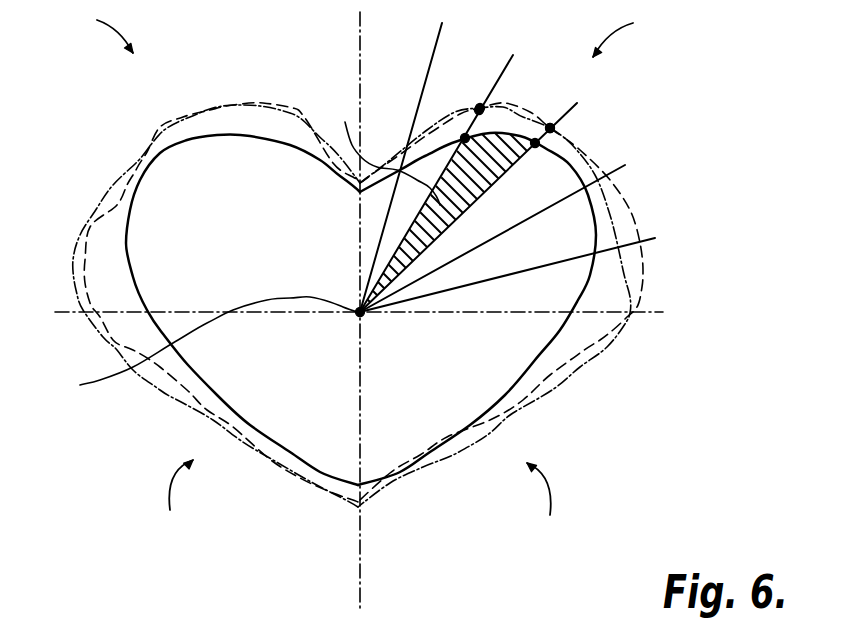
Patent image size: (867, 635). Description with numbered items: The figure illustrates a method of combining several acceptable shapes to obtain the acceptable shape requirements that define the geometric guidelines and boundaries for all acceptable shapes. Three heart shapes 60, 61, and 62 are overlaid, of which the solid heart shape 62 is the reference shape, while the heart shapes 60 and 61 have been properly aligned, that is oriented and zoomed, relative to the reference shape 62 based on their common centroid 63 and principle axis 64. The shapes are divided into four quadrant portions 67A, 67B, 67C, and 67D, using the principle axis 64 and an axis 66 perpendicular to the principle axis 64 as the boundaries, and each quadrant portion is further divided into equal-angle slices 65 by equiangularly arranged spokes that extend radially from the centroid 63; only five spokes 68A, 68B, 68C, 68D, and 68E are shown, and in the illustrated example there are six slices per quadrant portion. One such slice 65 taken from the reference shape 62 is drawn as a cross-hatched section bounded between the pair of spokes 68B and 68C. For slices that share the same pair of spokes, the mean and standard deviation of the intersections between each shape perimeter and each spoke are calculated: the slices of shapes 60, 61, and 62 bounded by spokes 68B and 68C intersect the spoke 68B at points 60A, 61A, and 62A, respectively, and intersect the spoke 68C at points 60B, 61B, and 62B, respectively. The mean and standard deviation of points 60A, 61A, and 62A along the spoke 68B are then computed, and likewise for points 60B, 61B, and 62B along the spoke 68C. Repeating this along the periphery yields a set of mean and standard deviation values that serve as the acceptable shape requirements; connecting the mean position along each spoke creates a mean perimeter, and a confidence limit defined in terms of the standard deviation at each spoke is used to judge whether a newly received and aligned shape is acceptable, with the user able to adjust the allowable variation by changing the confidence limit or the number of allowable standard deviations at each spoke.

The heart shape 60 is at (160, 127).
The heart shape 61 is at (97, 208).
The reference shape 62 is at (212, 135).
The centroid 63 is at (207, 348).
The principle axis 64 is at (358, 47).
The slice 65 is at (385, 155).
The axis perpendicular to the principle axis 66 is at (645, 317).
The quadrant portion 67A is at (634, 31).
The quadrant portion 67B is at (546, 506).
The quadrant portion 67C is at (174, 505).
The quadrant portion 67D is at (87, 29).
The spoke 68A is at (436, 45).
The spoke 68B is at (496, 74).
The spoke 68C is at (568, 110).
The spoke 68D is at (624, 165).
The spoke 68E is at (655, 238).
The intersection point 60A is at (481, 106).
The intersection point 61A is at (478, 108).
The intersection point 62A is at (464, 137).
The intersection point 62B is at (535, 143).
The intersection point 60B is at (551, 128).
The intersection point 61B is at (551, 128).